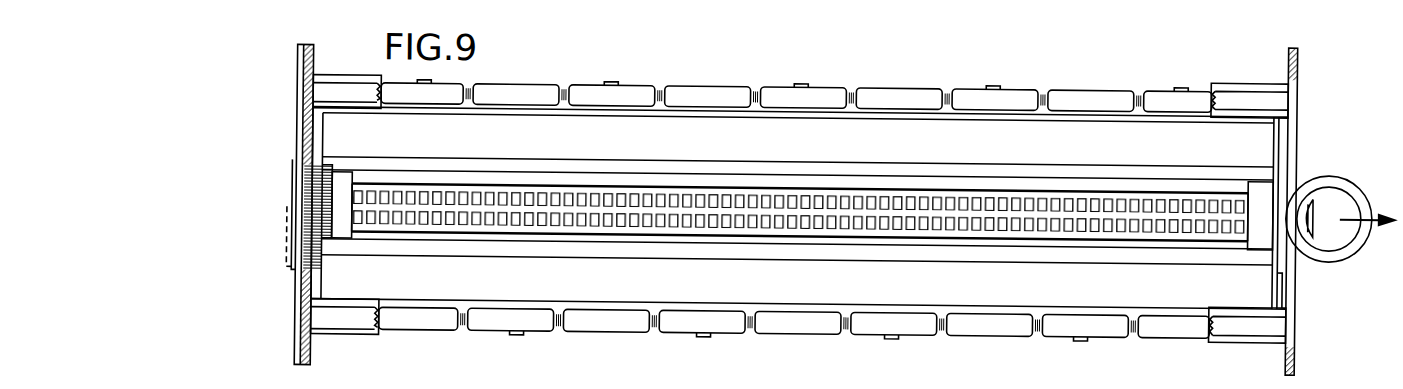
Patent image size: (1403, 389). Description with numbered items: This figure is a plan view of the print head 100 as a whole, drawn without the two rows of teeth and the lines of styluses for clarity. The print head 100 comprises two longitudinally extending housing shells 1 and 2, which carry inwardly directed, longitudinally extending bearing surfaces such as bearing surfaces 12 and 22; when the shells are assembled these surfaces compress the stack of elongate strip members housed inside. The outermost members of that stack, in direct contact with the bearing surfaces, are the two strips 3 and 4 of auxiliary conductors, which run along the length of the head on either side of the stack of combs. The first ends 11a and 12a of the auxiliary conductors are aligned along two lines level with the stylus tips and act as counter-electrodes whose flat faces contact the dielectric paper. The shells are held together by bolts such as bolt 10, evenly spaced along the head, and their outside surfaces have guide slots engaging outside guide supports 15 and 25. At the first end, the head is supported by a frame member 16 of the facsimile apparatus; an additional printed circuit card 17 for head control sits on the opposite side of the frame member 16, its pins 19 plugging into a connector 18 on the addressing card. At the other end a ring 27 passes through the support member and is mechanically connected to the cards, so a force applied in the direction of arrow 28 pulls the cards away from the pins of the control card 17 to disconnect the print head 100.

The print head 100 is at (712, 73).
The housing shell 1 is at (850, 127).
The housing shell 2 is at (972, 277).
The strip of auxiliary conductors 3 is at (800, 208).
The strip of auxiliary conductors 4 is at (703, 233).
The bolt 10 is at (806, 81).
The first end of auxiliary conductor 11a is at (993, 189).
The first end of auxiliary conductor 12a is at (985, 226).
The bearing surface 12 is at (900, 166).
The bearing surface 22 is at (872, 244).
The guide support 15 is at (1257, 315).
The frame member 16 is at (312, 347).
The printed circuit card 17 is at (293, 331).
The connector 18 is at (347, 180).
The pins 19 is at (336, 187).
The guide support 25 is at (1255, 92).
The ring 27 is at (1327, 171).
The arrow 28 is at (1373, 206).